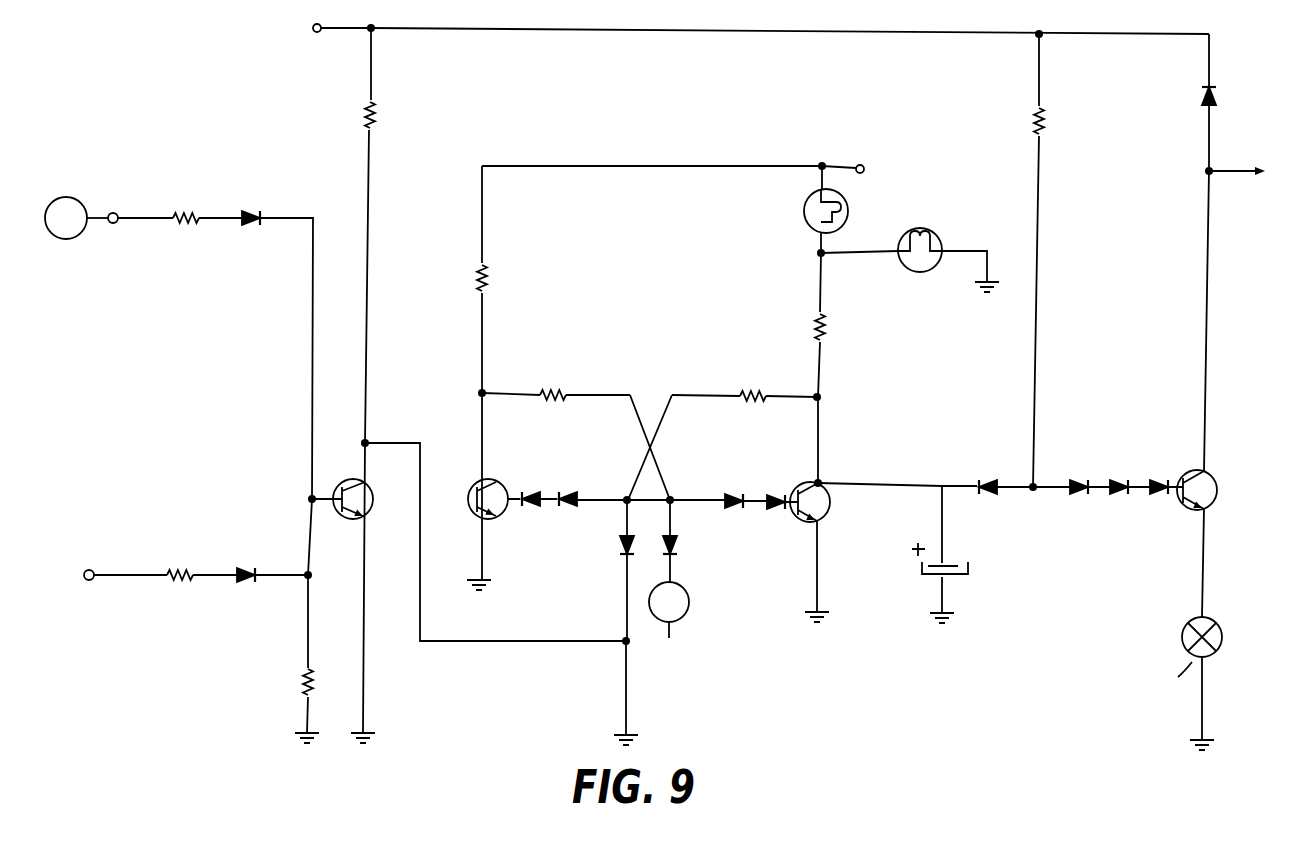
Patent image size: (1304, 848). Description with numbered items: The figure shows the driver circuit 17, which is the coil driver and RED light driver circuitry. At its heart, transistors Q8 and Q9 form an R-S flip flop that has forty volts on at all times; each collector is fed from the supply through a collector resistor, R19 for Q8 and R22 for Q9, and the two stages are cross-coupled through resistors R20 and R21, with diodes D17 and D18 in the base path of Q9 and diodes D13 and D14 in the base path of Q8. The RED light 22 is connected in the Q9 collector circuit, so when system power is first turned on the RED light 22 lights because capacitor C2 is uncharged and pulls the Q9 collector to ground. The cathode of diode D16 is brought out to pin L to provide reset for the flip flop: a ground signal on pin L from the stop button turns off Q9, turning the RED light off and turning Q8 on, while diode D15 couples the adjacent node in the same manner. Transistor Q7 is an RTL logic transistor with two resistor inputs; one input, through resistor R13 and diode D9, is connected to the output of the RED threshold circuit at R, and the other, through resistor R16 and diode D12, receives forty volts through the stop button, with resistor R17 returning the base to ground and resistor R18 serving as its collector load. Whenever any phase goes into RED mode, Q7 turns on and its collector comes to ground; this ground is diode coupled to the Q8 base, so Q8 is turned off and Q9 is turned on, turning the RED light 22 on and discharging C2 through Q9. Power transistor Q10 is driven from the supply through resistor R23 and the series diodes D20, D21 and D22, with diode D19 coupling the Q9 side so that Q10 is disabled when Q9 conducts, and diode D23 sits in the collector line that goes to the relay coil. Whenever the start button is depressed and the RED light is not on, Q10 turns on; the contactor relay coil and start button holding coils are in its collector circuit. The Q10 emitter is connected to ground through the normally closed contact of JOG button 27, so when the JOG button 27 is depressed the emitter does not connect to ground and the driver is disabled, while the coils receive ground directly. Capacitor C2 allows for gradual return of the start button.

The driver circuit 17 is at (663, 375).
The RED light 22 is at (908, 268).
The JOG button 27 is at (1237, 628).
The input resistor R13 is at (191, 222).
The input resistor R16 is at (183, 579).
The base resistor R17 is at (326, 695).
The collector resistor R18 is at (391, 380).
The collector resistor R19 is at (502, 279).
The cross-coupling resistor R20 is at (556, 399).
The cross-coupling resistor R21 is at (744, 399).
The lamp series resistor R22 is at (847, 325).
The base resistor R23 is at (1061, 260).
The input diode D9 is at (252, 204).
The input diode D12 is at (244, 560).
The coupling diode D13 is at (527, 516).
The coupling diode D14 is at (575, 516).
The coupling diode D15 is at (607, 570).
The reset diode D16 is at (685, 541).
The coupling diode D17 is at (727, 518).
The coupling diode D18 is at (768, 519).
The coupling diode D19 is at (985, 469).
The base diode D20 is at (1076, 469).
The base diode D21 is at (1121, 506).
The base diode D22 is at (1158, 469).
The collector diode D23 is at (1234, 102).
The RTL logic transistor Q7 is at (378, 500).
The flip-flop transistor Q8 is at (476, 512).
The flip-flop transistor Q9 is at (825, 487).
The power transistor Q10 is at (1209, 478).
The capacitor C2 is at (925, 549).